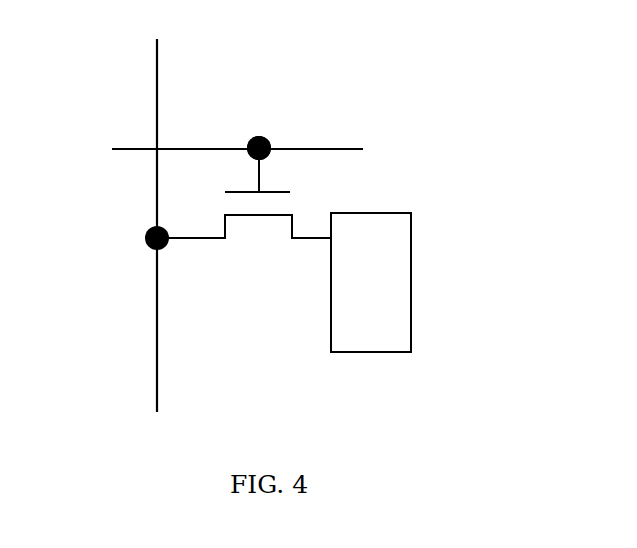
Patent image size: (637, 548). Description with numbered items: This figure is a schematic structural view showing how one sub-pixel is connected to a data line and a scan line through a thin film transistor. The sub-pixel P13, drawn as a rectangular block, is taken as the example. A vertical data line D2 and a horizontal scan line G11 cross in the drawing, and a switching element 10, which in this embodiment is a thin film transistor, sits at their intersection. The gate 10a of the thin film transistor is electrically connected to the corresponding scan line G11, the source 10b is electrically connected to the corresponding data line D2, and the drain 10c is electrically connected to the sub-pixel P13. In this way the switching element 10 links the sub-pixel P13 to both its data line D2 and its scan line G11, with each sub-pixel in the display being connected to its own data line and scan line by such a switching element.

The data line D2 is at (154, 207).
The scan line G11 is at (212, 145).
The switching element 10 is at (310, 126).
The gate 10a is at (273, 164).
The source 10b is at (185, 247).
The drain 10c is at (307, 246).
The sub-pixel P13 is at (371, 282).